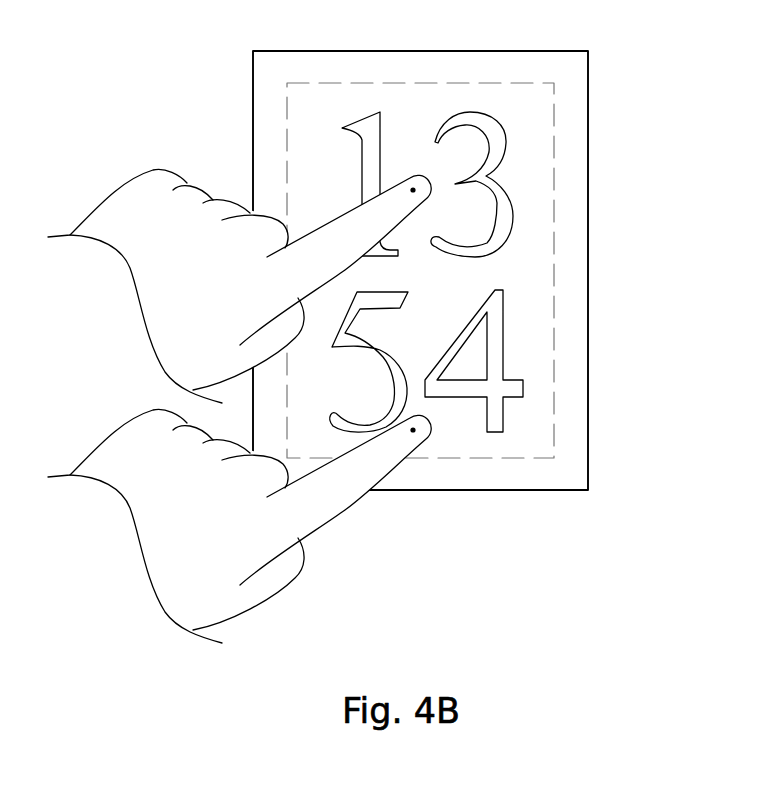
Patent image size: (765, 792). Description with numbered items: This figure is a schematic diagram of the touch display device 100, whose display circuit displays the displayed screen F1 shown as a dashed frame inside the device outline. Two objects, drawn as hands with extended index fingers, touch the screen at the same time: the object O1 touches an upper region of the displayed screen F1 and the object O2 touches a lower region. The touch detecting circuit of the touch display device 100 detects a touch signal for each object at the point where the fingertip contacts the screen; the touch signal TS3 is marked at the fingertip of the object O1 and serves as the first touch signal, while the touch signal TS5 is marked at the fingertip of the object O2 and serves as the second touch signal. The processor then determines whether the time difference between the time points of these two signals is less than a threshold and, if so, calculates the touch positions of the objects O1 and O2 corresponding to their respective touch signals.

The touch display device 100 is at (588, 257).
The displayed screen F1 is at (554, 137).
The object O1 is at (325, 255).
The object O2 is at (378, 460).
The touch signal TS3 is at (418, 192).
The touch signal TS5 is at (418, 432).